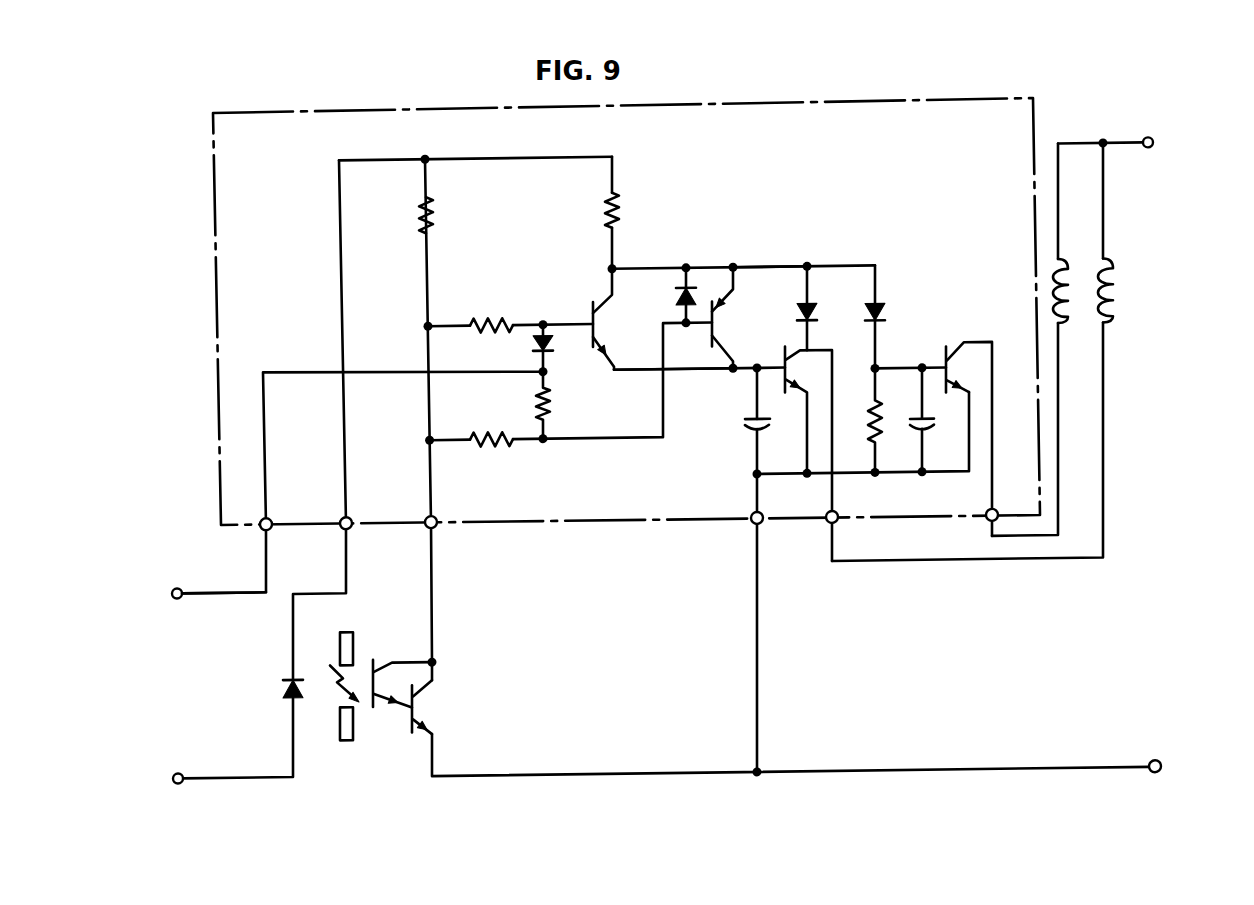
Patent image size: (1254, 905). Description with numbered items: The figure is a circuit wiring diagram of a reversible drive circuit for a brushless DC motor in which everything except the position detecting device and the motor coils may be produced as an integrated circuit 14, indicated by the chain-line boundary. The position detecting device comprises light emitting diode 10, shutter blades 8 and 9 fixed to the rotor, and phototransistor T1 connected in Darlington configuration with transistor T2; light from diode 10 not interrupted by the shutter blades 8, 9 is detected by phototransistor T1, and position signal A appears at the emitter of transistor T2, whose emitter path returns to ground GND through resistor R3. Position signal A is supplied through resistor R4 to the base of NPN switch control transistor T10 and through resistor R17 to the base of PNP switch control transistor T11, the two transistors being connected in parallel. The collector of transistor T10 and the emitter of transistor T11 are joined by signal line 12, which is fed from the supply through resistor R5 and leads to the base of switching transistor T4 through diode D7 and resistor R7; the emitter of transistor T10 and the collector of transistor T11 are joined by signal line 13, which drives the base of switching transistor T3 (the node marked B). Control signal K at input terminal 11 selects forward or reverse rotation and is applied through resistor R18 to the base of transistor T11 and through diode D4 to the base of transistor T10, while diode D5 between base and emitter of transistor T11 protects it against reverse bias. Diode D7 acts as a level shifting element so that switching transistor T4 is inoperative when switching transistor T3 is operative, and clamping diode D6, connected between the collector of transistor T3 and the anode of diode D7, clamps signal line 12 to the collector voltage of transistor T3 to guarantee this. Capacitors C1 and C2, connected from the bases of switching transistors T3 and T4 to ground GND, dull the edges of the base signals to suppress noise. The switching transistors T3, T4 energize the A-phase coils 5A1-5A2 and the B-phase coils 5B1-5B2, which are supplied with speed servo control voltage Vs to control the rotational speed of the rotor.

The resistor R3 is at (431, 215).
The resistor R4 is at (497, 328).
The resistor R5 is at (620, 215).
The resistor R7 is at (872, 431).
The resistor R17 is at (503, 441).
The resistor R18 is at (550, 411).
The diode D4 is at (548, 349).
The diode D5 is at (678, 302).
The clamping diode D6 is at (808, 319).
The diode D7 is at (882, 320).
The capacitor C1 is at (744, 432).
The capacitor C2 is at (933, 434).
The phototransistor T1 is at (387, 667).
The transistor T2 is at (414, 712).
The switching transistor T3 is at (792, 378).
The switching transistor T4 is at (966, 357).
The NPN switch control transistor T10 is at (603, 347).
The PNP switch control transistor T11 is at (726, 324).
The shutter blade 8 is at (340, 637).
The shutter blade 9 is at (346, 744).
The light emitting diode 10 is at (282, 689).
The input terminal 11 is at (172, 593).
The signal line 12 is at (763, 274).
The signal line 13 is at (690, 376).
The integrated circuit 14 is at (610, 527).
The control switch K is at (211, 596).
The position signal A is at (726, 291).
The inverted position signal B is at (610, 277).
The A-phase coils 5A1-5A2 is at (1113, 295).
The B-phase coils 5B1-5B2 is at (1068, 293).
The speed servo control voltage Vs is at (1167, 142).
The ground GND is at (1188, 765).